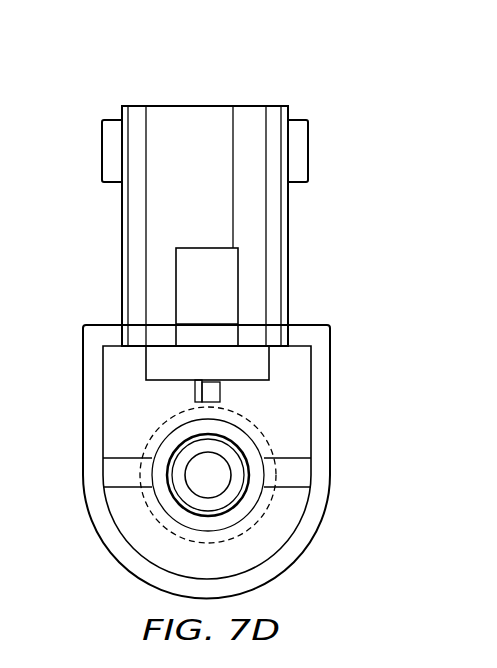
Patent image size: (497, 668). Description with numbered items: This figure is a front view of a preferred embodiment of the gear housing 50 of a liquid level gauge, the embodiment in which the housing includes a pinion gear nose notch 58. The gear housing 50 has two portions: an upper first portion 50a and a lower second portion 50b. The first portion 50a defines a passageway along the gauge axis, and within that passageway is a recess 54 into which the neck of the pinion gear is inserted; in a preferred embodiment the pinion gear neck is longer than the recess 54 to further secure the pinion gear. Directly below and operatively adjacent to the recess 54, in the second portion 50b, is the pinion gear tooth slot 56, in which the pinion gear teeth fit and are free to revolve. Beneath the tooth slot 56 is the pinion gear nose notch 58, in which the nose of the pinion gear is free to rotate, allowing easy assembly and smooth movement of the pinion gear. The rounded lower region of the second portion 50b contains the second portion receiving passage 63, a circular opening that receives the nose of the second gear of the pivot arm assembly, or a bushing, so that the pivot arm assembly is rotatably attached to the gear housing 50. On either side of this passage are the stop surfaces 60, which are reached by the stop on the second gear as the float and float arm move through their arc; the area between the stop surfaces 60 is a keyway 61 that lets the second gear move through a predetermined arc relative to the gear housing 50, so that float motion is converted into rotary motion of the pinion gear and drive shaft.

The gear housing 50 is at (259, 88).
The first portion 50a is at (84, 107).
The second portion 50b is at (64, 326).
The recess 54 is at (203, 261).
The pinion gear tooth slot 56 is at (253, 368).
The pinion gear nose notch 58 is at (195, 394).
The stop surfaces 60 is at (290, 469).
The keyway 61 is at (117, 436).
The second portion receiving passage 63 is at (213, 468).